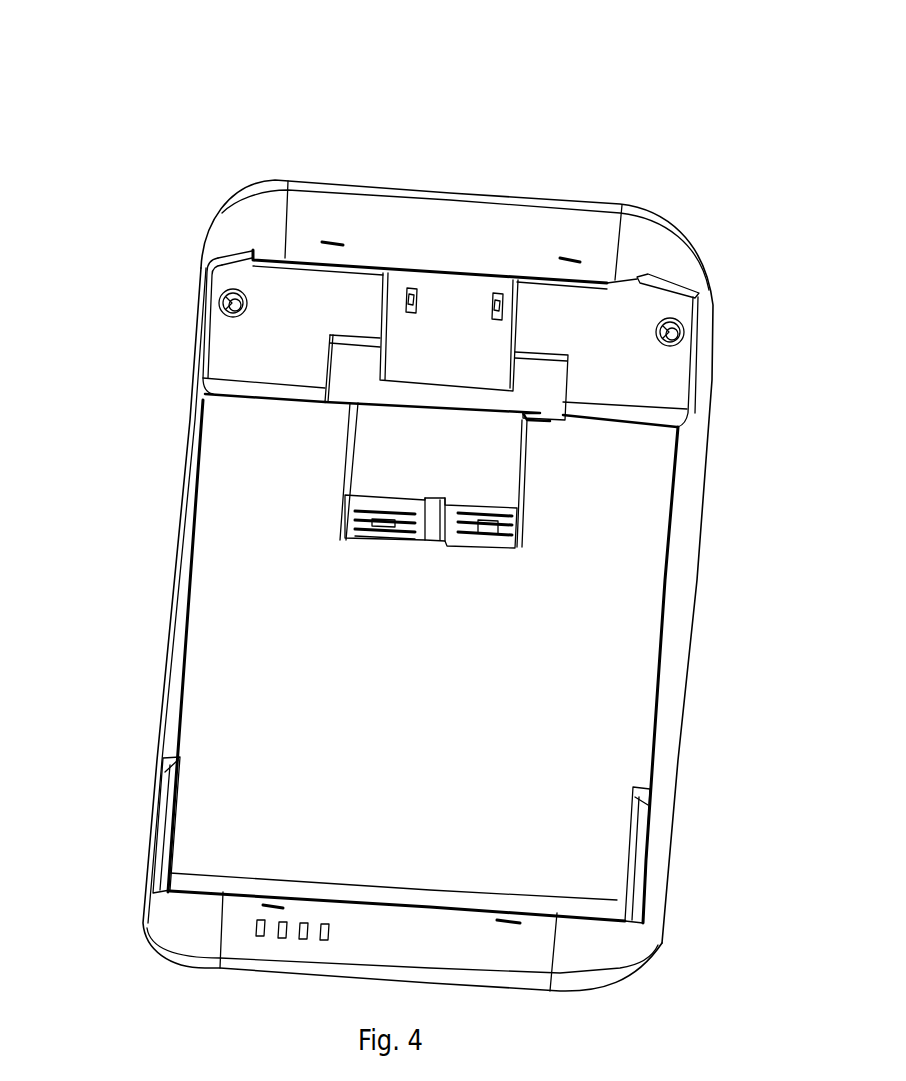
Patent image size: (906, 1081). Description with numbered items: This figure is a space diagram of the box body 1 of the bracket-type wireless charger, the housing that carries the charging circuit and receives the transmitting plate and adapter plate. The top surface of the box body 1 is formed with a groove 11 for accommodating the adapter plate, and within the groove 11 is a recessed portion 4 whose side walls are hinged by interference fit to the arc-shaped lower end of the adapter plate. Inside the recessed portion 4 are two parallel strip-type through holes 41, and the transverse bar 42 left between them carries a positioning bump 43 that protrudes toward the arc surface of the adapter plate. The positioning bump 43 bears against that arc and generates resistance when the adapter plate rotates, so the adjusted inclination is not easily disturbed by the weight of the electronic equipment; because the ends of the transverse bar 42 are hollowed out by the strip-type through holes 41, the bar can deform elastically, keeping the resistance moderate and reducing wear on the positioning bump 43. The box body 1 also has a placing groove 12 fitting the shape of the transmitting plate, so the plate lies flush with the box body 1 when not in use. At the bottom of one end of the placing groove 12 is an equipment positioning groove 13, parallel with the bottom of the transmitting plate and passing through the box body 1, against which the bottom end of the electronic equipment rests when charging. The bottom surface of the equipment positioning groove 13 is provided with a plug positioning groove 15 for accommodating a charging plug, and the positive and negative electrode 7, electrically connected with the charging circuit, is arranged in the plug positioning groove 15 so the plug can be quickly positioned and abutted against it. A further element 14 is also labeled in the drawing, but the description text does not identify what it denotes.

The box body 1 is at (207, 920).
The groove 11 is at (397, 429).
The placing groove 12 is at (260, 663).
The equipment positioning groove 13 is at (300, 311).
The screw 14 is at (697, 300).
The plug positioning groove 15 is at (430, 362).
The recessed portion 4 is at (284, 512).
The strip-type through holes 41 is at (350, 513).
The transverse bar 42 is at (350, 523).
The positioning bump 43 is at (350, 530).
The positive and negative electrode 7 is at (495, 290).